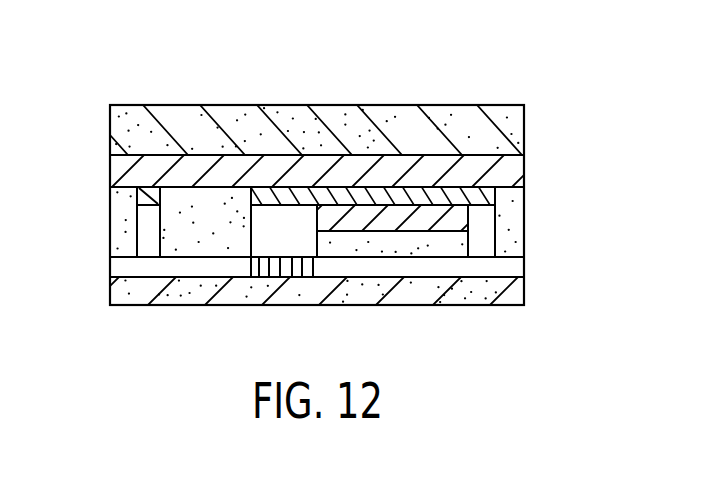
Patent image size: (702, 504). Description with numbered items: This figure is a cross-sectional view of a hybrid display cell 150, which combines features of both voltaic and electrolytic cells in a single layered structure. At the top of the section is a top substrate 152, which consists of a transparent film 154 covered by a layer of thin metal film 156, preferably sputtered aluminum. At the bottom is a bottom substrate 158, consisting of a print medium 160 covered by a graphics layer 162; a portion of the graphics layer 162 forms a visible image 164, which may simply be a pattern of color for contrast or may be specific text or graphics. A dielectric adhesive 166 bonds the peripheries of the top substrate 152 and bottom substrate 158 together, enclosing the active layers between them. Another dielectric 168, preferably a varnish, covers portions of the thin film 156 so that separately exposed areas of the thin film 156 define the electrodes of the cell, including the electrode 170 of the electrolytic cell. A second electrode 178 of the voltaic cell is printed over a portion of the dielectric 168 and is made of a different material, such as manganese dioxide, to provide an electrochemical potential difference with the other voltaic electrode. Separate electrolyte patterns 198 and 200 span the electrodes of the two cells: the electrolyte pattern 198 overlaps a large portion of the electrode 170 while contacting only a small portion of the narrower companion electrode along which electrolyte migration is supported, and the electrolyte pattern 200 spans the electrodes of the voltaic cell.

The hybrid display cell 150 is at (189, 49).
The top substrate 152 is at (148, 105).
The transparent film 154 is at (132, 142).
The thin metal film 156 is at (124, 167).
The bottom substrate 158 is at (205, 306).
The print medium 160 is at (112, 264).
The graphics layer 162 is at (156, 250).
The visible image 164 is at (281, 267).
The dielectric adhesive 166 is at (505, 213).
The dielectric 168 is at (488, 206).
The electrode 170 is at (214, 188).
The second electrode 178 is at (470, 223).
The electrolyte pattern 198 is at (205, 233).
The electrolyte pattern 200 is at (401, 240).